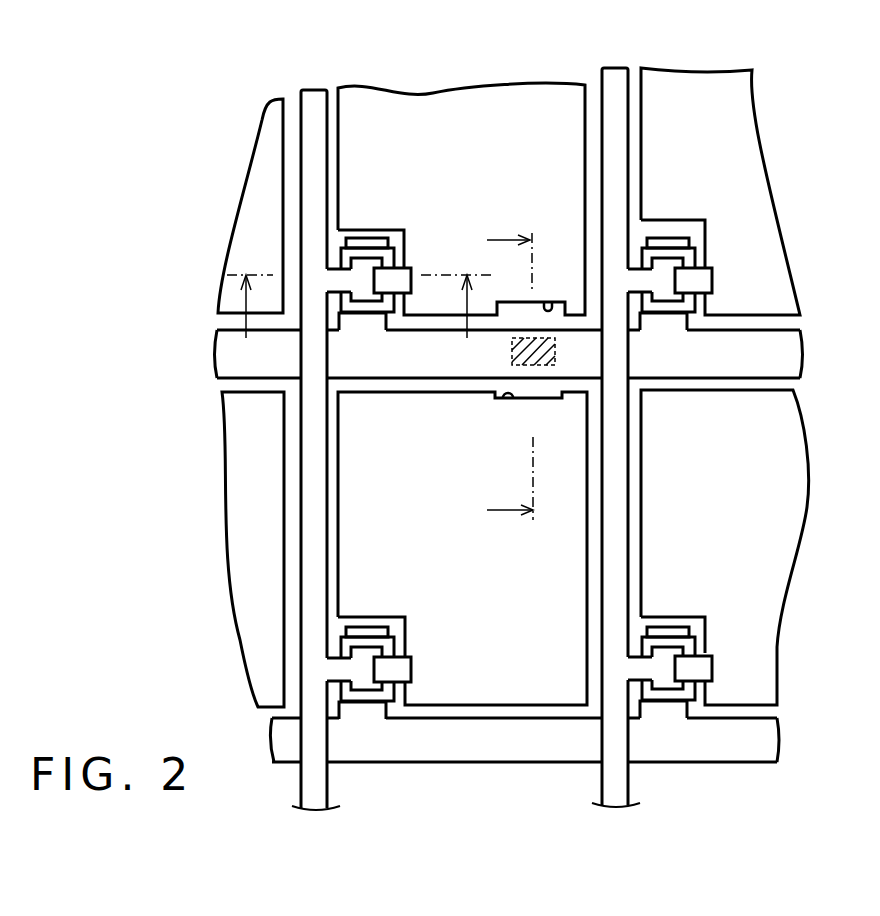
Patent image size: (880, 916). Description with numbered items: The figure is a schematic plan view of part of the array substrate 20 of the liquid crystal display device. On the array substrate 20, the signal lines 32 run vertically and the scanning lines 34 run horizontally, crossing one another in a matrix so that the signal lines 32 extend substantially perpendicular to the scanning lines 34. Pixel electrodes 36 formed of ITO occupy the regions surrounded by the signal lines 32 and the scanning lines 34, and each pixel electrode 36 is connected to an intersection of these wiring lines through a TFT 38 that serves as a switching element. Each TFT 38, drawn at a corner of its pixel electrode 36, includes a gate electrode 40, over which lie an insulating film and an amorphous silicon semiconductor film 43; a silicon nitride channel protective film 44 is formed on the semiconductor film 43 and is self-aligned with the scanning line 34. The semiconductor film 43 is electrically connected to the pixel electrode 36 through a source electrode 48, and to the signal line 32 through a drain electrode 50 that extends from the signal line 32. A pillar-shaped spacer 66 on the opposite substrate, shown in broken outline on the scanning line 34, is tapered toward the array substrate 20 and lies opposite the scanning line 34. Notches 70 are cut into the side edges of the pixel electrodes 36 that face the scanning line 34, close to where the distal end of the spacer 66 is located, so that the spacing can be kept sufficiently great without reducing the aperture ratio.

The array substrate 20 is at (727, 60).
The signal line 32 is at (310, 102).
The scanning line 34 is at (770, 355).
The pixel electrode 36 is at (432, 102).
The TFT 38 is at (414, 624).
The gate electrode 40 is at (358, 240).
The semiconductor film 43 is at (385, 300).
The channel protective film 44 is at (370, 260).
The source electrode 48 is at (405, 275).
The drain electrode 50 is at (333, 280).
The pillar-shaped spacer 66 is at (555, 352).
The notch 70 is at (548, 302).